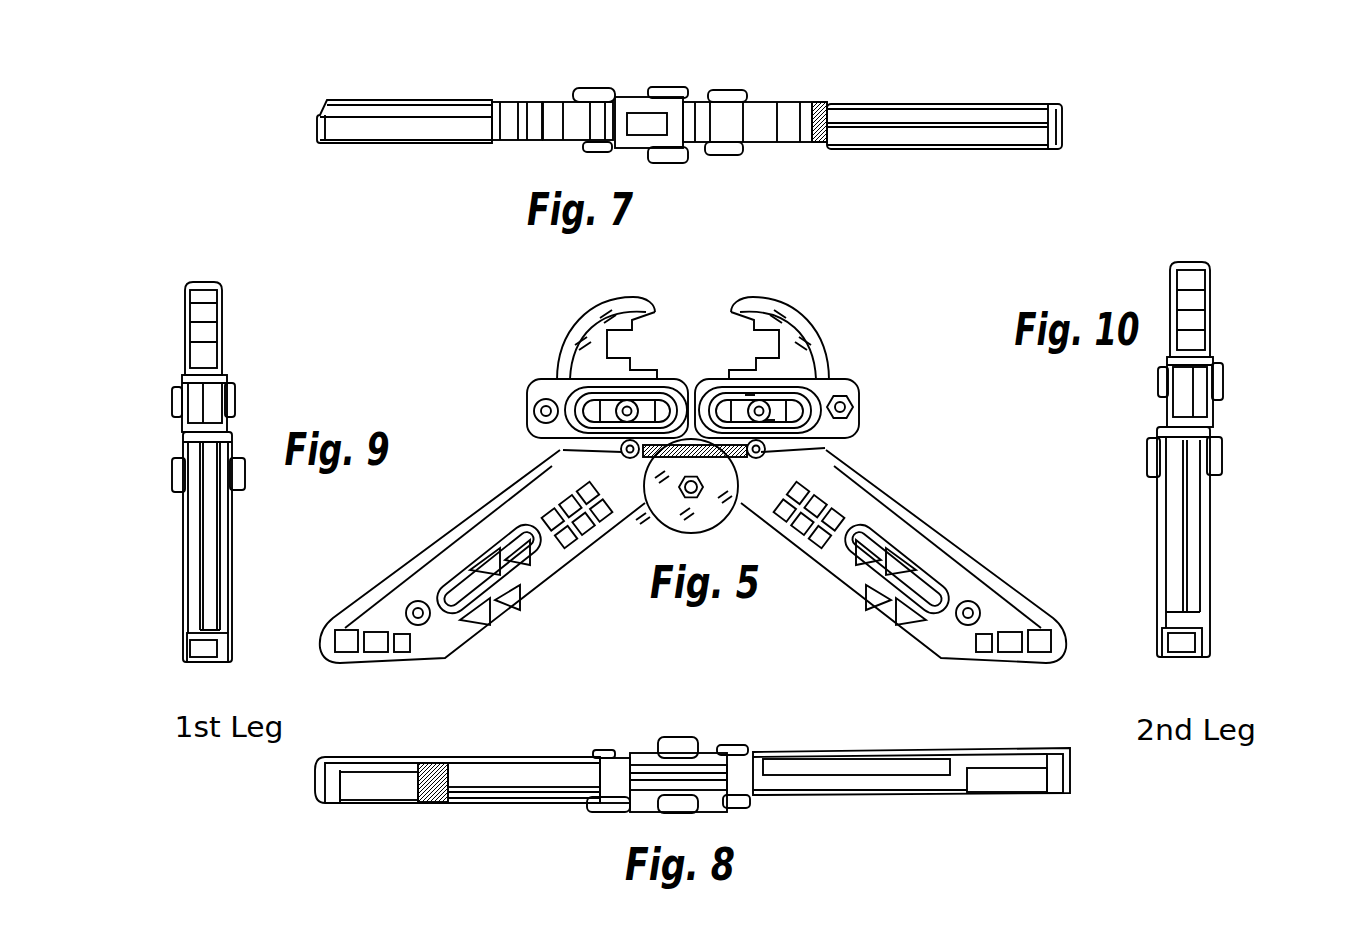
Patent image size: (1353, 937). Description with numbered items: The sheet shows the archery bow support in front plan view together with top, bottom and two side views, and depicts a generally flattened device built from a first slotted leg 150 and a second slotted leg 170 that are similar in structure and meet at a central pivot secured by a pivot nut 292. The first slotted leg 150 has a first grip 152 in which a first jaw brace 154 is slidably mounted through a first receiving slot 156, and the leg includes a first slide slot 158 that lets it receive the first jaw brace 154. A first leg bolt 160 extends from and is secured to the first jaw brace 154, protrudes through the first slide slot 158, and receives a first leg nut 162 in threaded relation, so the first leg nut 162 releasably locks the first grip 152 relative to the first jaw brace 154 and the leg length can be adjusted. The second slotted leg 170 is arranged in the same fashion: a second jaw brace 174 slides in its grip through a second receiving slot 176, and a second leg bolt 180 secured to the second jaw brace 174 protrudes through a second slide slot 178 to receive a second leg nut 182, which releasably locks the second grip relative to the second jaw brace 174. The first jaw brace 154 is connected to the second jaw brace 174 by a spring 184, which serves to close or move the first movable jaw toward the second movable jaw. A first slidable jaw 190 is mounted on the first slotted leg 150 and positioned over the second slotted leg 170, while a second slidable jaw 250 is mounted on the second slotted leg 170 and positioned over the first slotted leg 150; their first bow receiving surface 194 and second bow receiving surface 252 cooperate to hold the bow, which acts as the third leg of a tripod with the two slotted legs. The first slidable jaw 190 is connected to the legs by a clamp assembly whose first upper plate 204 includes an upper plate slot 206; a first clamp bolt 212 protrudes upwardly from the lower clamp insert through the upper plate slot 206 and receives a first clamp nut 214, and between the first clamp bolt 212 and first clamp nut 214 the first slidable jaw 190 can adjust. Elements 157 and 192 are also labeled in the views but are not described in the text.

In FIG. 8, the first slotted leg 150 is at (373, 803).
In FIG. 9, the first slotted leg 150 is at (164, 547).
In FIG. 5, the first slotted leg 150 is at (467, 583).
In FIG. 5, the first grip 152 is at (363, 587).
In FIG. 5, the first jaw brace 154 is at (677, 467).
In FIG. 5, the first receiving slot 156 is at (563, 450).
In FIG. 7, the first leg side 157 is at (398, 100).
In FIG. 9, the first slide slot 158 is at (183, 563).
In FIG. 5, the first slide slot 158 is at (513, 573).
In FIG. 5, the first leg bolt 160 is at (407, 623).
In FIG. 5, the first leg nut 162 is at (470, 636).
In FIG. 7, the second slotted leg 170 is at (965, 104).
In FIG. 8, the second slotted leg 170 is at (985, 795).
In FIG. 10, the second slotted leg 170 is at (1202, 640).
In FIG. 5, the second slotted leg 170 is at (908, 587).
In FIG. 5, the second jaw brace 174 is at (748, 512).
In FIG. 5, the second receiving slot 176 is at (822, 445).
In FIG. 5, the second slide slot 178 is at (887, 556).
In FIG. 5, the second leg bolt 180 is at (947, 657).
In FIG. 5, the second leg nut 182 is at (1010, 648).
In FIG. 5, the spring 184 is at (641, 528).
In FIG. 5, the first slidable jaw 190 is at (782, 287).
In FIG. 5, the second cam notch 192 is at (748, 345).
In FIG. 9, the first bow receiving surface 194 is at (185, 313).
In FIG. 5, the first upper plate 204 is at (830, 443).
In FIG. 5, the upper plate slot 206 is at (848, 394).
In FIG. 7, the first clamp bolt 212 is at (735, 88).
In FIG. 8, the first clamp bolt 212 is at (733, 742).
In FIG. 5, the first clamp bolt 212 is at (758, 400).
In FIG. 7, the first clamp nut 214 is at (587, 84).
In FIG. 8, the first clamp nut 214 is at (608, 750).
In FIG. 5, the first clamp nut 214 is at (772, 420).
In FIG. 5, the second slidable jaw 250 is at (557, 306).
In FIG. 10, the second bow receiving surface 252 is at (1210, 297).
In FIG. 5, the second bow receiving surface 252 is at (671, 300).
In FIG. 7, the pivot nut 292 is at (660, 87).
In FIG. 8, the pivot nut 292 is at (683, 735).